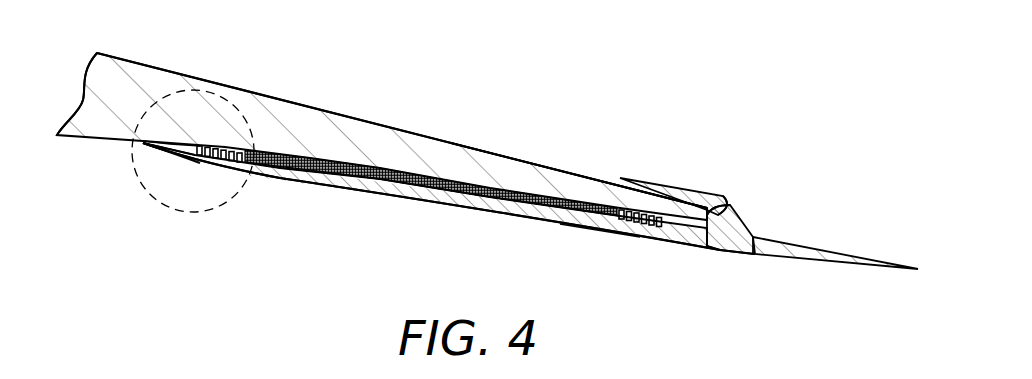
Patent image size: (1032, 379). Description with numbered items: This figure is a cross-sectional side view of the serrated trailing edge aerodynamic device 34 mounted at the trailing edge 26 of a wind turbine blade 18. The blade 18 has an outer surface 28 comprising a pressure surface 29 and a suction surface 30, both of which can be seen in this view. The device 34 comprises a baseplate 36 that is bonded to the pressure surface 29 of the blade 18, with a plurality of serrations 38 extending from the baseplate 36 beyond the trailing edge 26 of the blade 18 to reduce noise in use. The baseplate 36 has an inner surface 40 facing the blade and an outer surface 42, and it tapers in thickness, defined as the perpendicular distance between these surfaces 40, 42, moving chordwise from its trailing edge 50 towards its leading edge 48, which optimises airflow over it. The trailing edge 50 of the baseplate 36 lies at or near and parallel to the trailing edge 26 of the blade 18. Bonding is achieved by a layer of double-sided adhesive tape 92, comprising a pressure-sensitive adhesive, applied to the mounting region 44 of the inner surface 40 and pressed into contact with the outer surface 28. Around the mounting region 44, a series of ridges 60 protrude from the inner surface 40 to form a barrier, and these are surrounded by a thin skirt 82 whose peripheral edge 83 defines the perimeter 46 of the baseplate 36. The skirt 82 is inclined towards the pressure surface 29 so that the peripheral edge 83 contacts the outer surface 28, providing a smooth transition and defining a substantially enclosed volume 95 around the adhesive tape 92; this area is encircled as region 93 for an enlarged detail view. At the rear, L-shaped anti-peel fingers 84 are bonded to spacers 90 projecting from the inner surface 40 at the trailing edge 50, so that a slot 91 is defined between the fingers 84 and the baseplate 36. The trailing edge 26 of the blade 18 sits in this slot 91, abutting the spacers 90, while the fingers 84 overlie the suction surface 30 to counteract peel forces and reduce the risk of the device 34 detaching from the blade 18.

The blade 18 is at (80, 70).
The outer surface 28 is at (390, 126).
The suction surface 30 is at (548, 166).
The aerodynamic device 34 is at (442, 232).
The baseplate 36 is at (528, 213).
The serrations 38 is at (848, 256).
The inner surface 40 is at (593, 233).
The outer surface 42 is at (630, 235).
The mounting region 44 is at (475, 203).
The perimeter 46 is at (157, 158).
The leading edge 48 is at (147, 146).
The trailing edge 50 is at (730, 210).
The ridges 60 is at (216, 167).
The skirt 82 is at (184, 152).
The peripheral edge 83 is at (156, 140).
The fingers 84 is at (673, 185).
The spacer 90 is at (717, 197).
The slot 91 is at (687, 231).
The double-sided adhesive tape 92 is at (390, 182).
The region 93 is at (240, 105).
The enclosed volume 95 is at (192, 153).
The trailing edge 26 is at (711, 230).
The pressure surface 29 is at (323, 183).